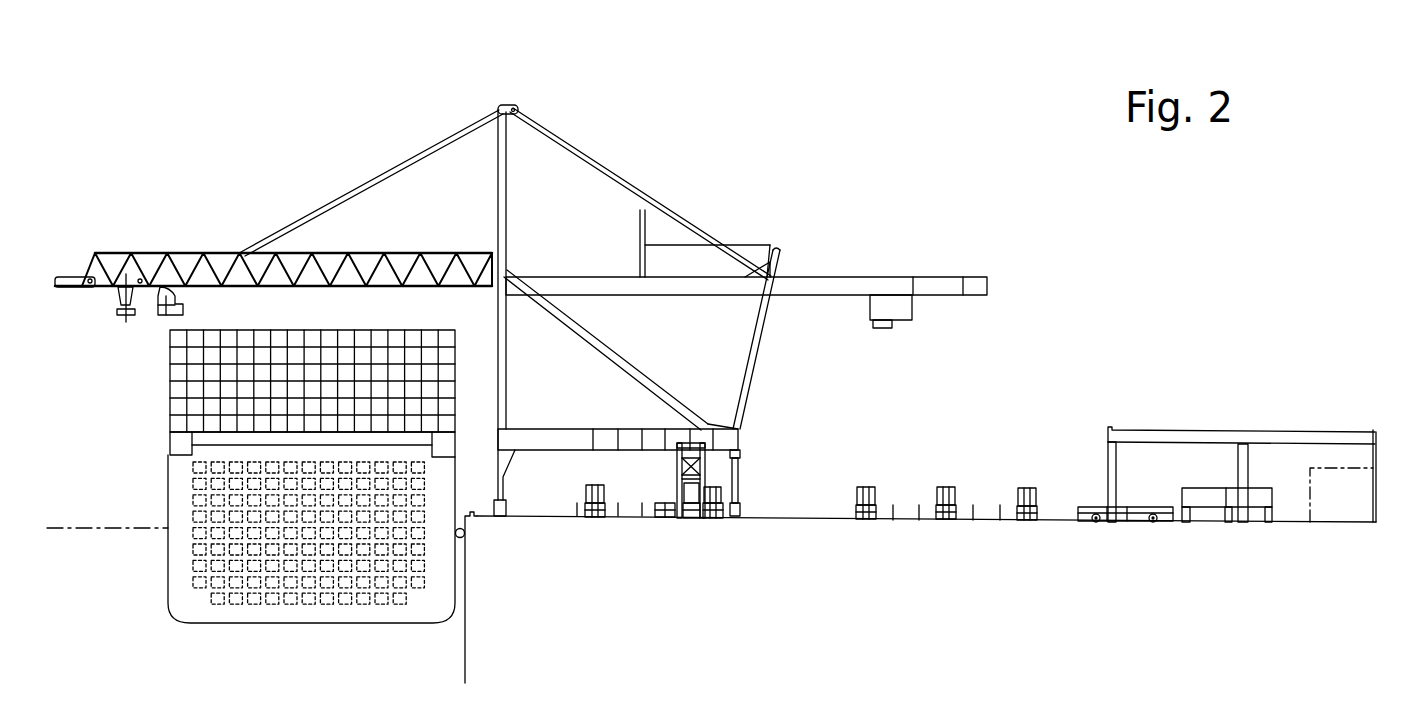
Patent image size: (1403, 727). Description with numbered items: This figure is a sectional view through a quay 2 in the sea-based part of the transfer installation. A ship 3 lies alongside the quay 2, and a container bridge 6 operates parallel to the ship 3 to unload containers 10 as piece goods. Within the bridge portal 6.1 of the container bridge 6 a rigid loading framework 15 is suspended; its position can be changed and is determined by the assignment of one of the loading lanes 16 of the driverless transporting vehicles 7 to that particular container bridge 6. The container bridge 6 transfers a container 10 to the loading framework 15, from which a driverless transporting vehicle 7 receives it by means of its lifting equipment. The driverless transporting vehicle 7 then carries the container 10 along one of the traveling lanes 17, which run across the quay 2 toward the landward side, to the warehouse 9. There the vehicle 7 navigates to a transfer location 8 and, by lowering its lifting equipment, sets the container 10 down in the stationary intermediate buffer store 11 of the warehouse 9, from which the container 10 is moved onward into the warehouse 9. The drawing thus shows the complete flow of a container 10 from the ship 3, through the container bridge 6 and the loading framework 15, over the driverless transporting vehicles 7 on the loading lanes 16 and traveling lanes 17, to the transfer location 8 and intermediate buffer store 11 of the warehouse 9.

The quay 2 is at (808, 520).
The ship 3 is at (177, 465).
The container bridge 6 is at (613, 182).
The bridge portal 6.1 is at (643, 465).
The driverless transporting vehicle 7 is at (667, 518).
The transfer location 8 is at (1213, 470).
The warehouse 9 is at (1338, 507).
The container 10 is at (1203, 498).
The intermediate buffer store 11 is at (1230, 525).
The loading framework 15 is at (705, 463).
The loading lane 16 is at (717, 488).
The traveling lane 17 is at (618, 502).